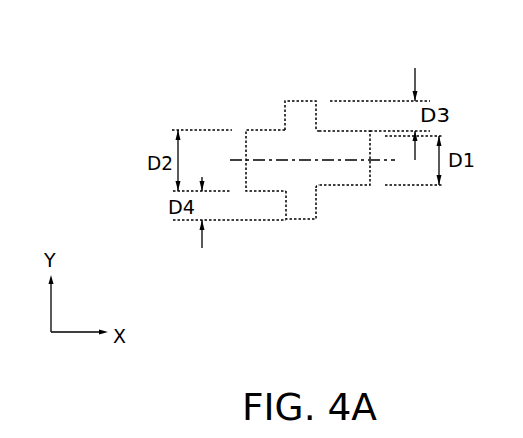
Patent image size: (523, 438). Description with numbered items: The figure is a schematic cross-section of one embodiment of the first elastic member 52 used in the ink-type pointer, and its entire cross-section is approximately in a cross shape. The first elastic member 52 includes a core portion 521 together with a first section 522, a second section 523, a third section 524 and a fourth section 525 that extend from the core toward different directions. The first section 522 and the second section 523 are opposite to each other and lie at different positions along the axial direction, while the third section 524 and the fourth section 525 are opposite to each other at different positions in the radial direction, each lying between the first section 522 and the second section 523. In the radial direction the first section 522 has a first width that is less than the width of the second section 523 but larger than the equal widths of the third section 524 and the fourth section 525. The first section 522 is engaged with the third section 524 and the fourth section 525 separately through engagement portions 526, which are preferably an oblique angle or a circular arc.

The first elastic member 52 is at (216, 80).
The core portion 521 is at (302, 162).
The first section 522 is at (370, 185).
The second section 523 is at (257, 137).
The third section 524 is at (302, 103).
The fourth section 525 is at (302, 210).
The engagement portion 526 is at (318, 187).